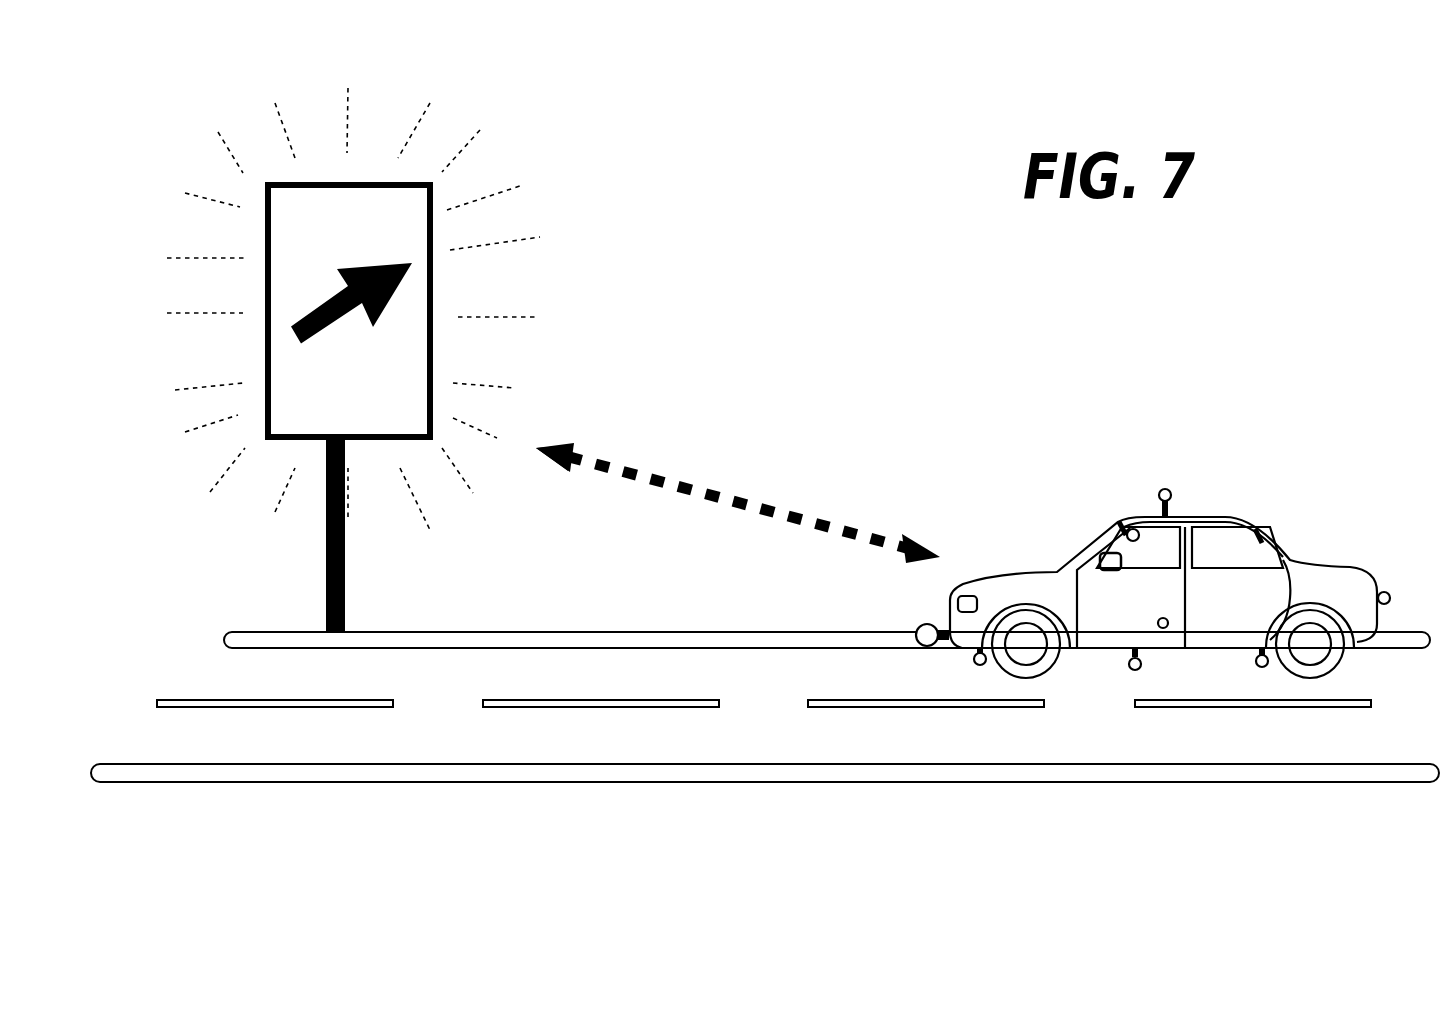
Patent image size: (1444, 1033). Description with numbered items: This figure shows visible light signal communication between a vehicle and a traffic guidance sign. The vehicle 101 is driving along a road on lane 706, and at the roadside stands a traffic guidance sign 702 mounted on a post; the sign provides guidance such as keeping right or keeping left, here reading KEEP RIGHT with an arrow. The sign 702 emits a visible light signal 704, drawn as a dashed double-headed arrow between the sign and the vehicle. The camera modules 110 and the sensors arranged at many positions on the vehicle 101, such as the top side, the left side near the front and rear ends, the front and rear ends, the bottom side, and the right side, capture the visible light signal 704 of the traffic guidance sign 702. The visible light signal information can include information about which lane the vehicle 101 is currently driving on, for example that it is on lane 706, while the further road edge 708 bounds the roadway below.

The first vehicle 101 is at (1332, 548).
The camera modules 110 is at (1177, 599).
The traffic guidance sign 702 is at (433, 186).
The visible light signal 704 is at (803, 513).
The lane 706 is at (827, 663).
The road edge 708 is at (765, 747).